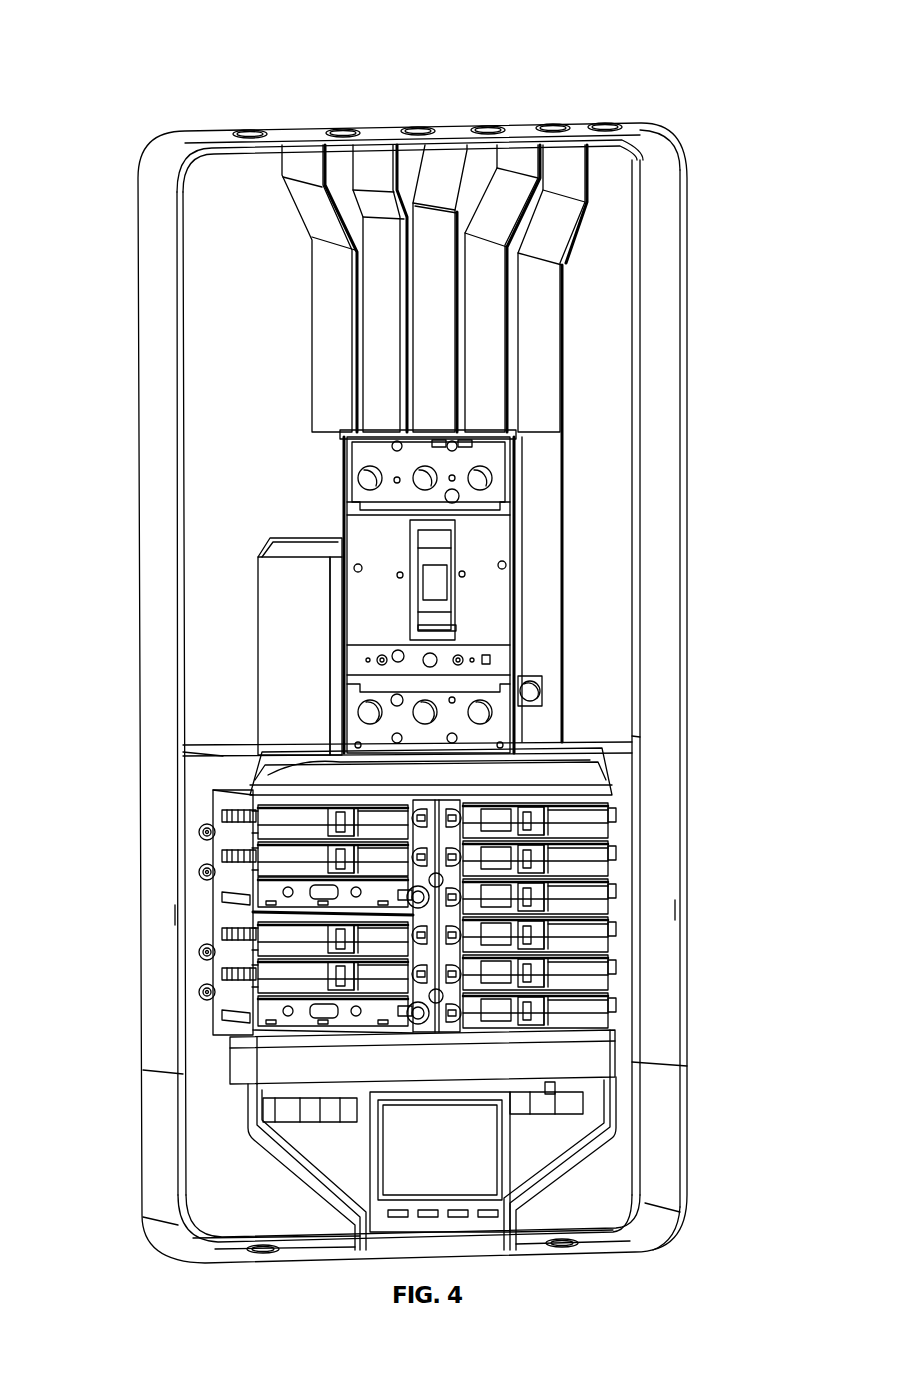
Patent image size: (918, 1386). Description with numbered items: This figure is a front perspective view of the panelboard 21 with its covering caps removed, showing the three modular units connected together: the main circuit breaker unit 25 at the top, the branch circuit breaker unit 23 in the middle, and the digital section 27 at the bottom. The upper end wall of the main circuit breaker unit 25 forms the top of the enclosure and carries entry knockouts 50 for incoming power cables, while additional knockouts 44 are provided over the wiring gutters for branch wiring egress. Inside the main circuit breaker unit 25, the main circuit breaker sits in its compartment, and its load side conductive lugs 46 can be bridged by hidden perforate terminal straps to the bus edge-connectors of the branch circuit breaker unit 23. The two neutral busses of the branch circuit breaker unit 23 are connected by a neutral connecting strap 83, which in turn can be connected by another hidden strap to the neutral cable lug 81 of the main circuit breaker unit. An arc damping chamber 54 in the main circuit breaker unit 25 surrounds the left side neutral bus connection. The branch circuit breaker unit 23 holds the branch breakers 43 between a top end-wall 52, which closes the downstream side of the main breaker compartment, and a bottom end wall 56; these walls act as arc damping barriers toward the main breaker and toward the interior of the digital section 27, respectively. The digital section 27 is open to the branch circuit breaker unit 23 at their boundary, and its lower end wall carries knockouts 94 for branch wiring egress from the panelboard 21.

The panelboard 21 is at (690, 118).
The knockouts 44 is at (250, 132).
The entry knockouts 50 is at (343, 131).
The main circuit breaker unit 25 is at (122, 372).
The arc damping chamber 54 is at (310, 592).
The load side conductive lugs 46 is at (355, 722).
The neutral cable lug 81 is at (541, 690).
The top end-wall 52 is at (578, 748).
The neutral connecting strap 83 is at (530, 762).
The branch breakers 43 is at (590, 858).
The branch circuit breaker unit 23 is at (122, 848).
The bottom end wall 56 is at (575, 1065).
The digital section 27 is at (122, 1148).
The knockouts 94 is at (262, 1246).